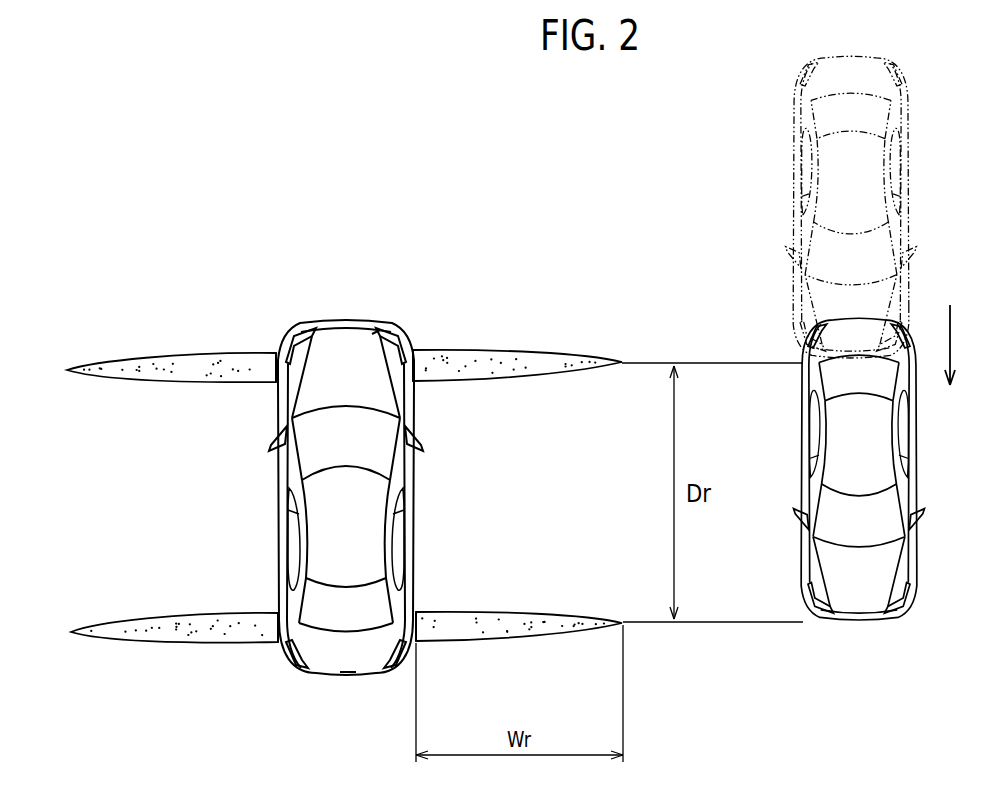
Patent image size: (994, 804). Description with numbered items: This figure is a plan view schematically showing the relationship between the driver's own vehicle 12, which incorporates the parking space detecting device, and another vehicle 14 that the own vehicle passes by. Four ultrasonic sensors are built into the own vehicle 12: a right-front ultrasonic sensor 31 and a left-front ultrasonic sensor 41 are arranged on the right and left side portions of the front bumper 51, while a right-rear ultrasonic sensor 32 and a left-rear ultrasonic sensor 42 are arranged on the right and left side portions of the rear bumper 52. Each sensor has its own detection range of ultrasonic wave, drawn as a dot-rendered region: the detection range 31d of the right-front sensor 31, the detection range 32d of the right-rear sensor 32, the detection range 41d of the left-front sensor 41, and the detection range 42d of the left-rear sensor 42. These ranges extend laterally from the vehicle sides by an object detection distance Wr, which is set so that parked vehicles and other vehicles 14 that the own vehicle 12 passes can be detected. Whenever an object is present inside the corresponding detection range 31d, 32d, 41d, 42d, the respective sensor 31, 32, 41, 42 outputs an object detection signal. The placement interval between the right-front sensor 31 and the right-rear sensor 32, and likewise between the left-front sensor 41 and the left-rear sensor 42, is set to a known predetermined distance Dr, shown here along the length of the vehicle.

The driver's own vehicle 12 is at (345, 350).
The other vehicle 14 is at (910, 209).
The right-front ultrasonic sensor 31 is at (413, 368).
The right-rear ultrasonic sensor 32 is at (416, 630).
The left-front ultrasonic sensor 41 is at (276, 370).
The left-rear ultrasonic sensor 42 is at (278, 632).
The detection range 31d is at (550, 365).
The detection range 32d is at (554, 636).
The detection range 41d is at (140, 366).
The detection range 42d is at (140, 637).
The front bumper 51 is at (375, 334).
The rear bumper 52 is at (348, 675).